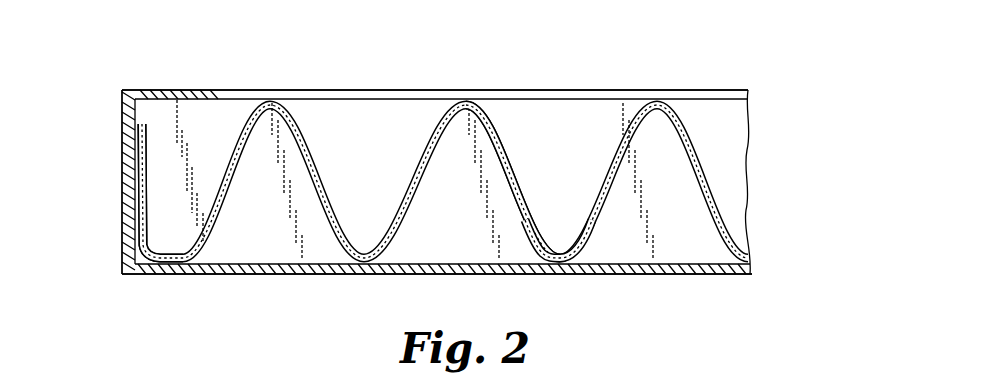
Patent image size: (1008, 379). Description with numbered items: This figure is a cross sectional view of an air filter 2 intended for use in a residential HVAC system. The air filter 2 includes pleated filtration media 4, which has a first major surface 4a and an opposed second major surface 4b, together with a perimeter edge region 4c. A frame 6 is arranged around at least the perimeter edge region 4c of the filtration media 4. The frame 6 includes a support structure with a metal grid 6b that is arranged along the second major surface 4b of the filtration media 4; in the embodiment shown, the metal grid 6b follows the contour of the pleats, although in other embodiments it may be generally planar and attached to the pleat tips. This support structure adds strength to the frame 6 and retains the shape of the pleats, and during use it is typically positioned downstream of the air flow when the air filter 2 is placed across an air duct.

The air filter 2 is at (690, 57).
The filtration media 4 is at (610, 147).
The first major surface 4a is at (520, 184).
The second major surface 4b is at (527, 223).
The perimeter edge region 4c is at (168, 263).
The frame 6 is at (437, 182).
The metal grid 6b is at (332, 222).